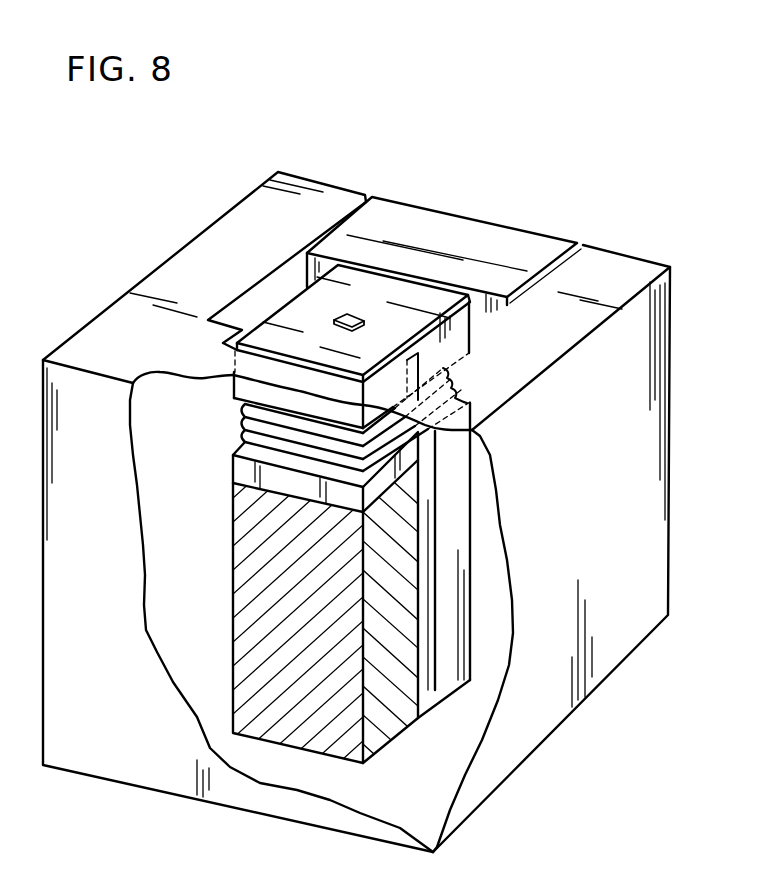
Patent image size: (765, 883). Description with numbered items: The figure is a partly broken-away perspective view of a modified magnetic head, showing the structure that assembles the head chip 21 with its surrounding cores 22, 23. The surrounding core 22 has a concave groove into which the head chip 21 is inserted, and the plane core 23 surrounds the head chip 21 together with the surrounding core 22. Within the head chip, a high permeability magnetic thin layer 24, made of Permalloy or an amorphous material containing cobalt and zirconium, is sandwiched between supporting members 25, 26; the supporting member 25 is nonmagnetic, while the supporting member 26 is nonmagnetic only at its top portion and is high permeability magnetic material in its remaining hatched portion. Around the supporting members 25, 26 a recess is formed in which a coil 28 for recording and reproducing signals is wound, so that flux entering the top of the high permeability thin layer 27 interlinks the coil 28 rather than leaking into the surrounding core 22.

The head chip 21 is at (232, 578).
The surrounding core 22 is at (252, 225).
The plane core 23 is at (503, 247).
The high permeability magnetic thin layer 24 is at (347, 317).
The supporting member 25 is at (413, 297).
The supporting member 26 is at (275, 338).
The high permeability thin layer 27 is at (420, 356).
The coil 28 is at (247, 430).